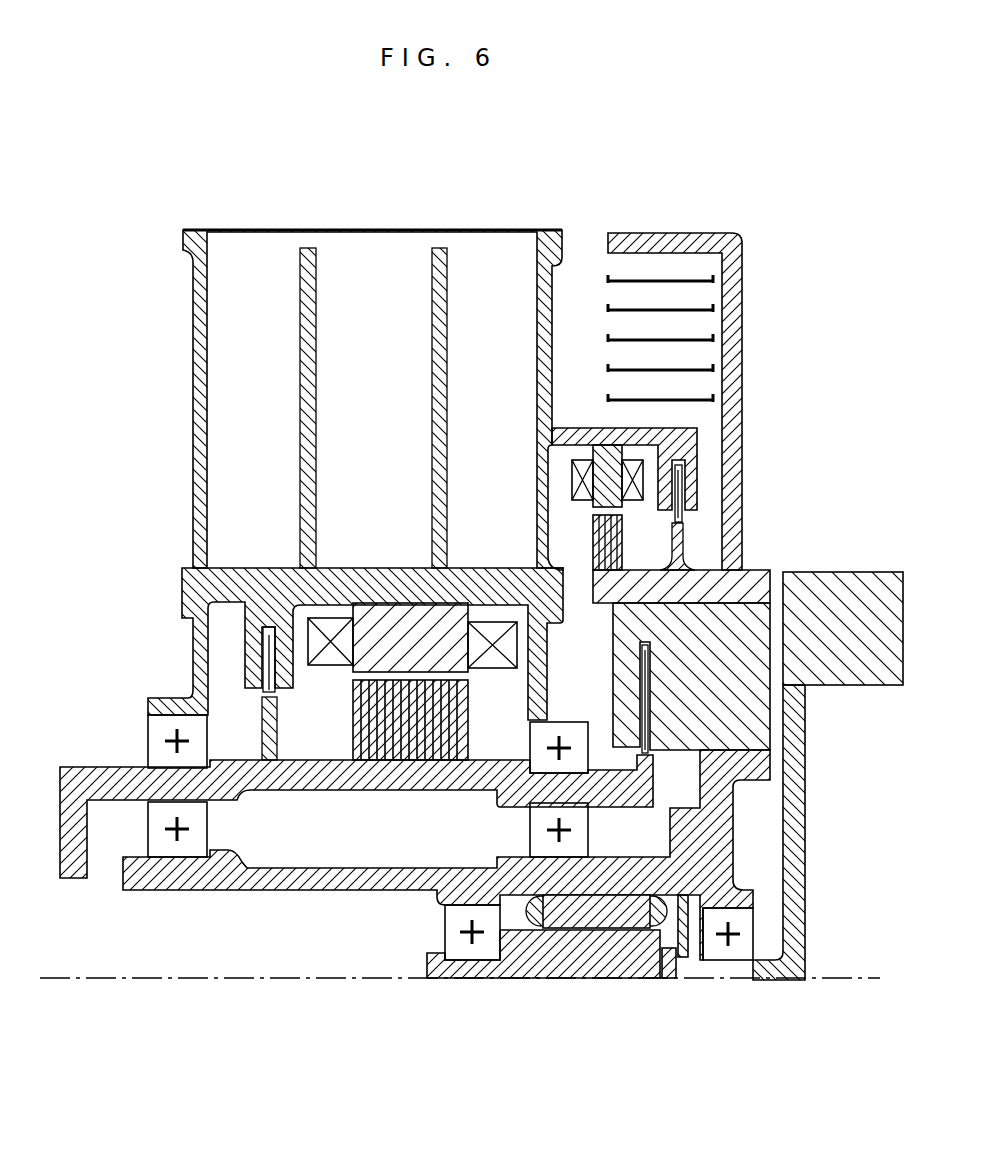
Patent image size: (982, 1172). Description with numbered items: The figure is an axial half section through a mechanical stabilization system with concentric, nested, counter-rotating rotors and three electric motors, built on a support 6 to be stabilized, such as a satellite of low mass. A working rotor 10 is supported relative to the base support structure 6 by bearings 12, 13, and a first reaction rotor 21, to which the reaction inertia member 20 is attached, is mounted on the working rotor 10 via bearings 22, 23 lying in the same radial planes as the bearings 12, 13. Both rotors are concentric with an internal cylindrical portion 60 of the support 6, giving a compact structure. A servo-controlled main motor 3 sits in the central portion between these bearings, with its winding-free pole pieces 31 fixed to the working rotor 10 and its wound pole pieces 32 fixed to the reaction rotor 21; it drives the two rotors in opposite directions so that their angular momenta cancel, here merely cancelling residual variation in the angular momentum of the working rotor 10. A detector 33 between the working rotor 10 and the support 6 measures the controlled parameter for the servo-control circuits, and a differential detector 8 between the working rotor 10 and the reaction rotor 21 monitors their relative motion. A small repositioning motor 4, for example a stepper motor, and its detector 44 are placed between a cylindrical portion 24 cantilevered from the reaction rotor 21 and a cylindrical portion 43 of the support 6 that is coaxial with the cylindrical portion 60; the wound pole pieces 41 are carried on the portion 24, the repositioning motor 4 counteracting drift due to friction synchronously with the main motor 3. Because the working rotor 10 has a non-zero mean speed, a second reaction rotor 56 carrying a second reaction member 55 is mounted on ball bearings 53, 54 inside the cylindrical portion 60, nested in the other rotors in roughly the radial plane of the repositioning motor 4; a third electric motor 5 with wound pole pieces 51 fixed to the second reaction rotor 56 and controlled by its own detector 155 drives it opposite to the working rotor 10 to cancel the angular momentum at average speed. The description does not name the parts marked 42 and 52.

The main electric motor 3 is at (412, 680).
The repositioning motor 4 is at (570, 491).
The third electric motor 5 is at (588, 946).
The support 6 is at (745, 721).
The differential detector 8 is at (270, 667).
The working rotor 10 is at (362, 772).
The bearing 12 is at (205, 829).
The bearing 13 is at (528, 830).
The reaction inertia member 20 is at (190, 311).
The reaction rotor 21 is at (484, 598).
The bearing 22 is at (152, 728).
The bearing 23 is at (586, 742).
The cylindrical portion 24 is at (652, 433).
The winding-free pole pieces 31 is at (432, 742).
The wound pole pieces 32 is at (389, 620).
The detector 33 is at (640, 659).
The wound pole pieces 41 is at (606, 446).
The magnet 42 is at (606, 548).
The cylindrical portion 43 is at (718, 586).
The detector 44 is at (670, 486).
The wound pole pieces 51 is at (610, 903).
The retaining ring 52 is at (666, 954).
The ball bearing 53 is at (450, 925).
The ball bearing 54 is at (738, 962).
The second reaction member 55 is at (800, 848).
The second reaction rotor 56 is at (514, 966).
The cylindrical portion 60 is at (302, 878).
The detector 155 is at (697, 958).